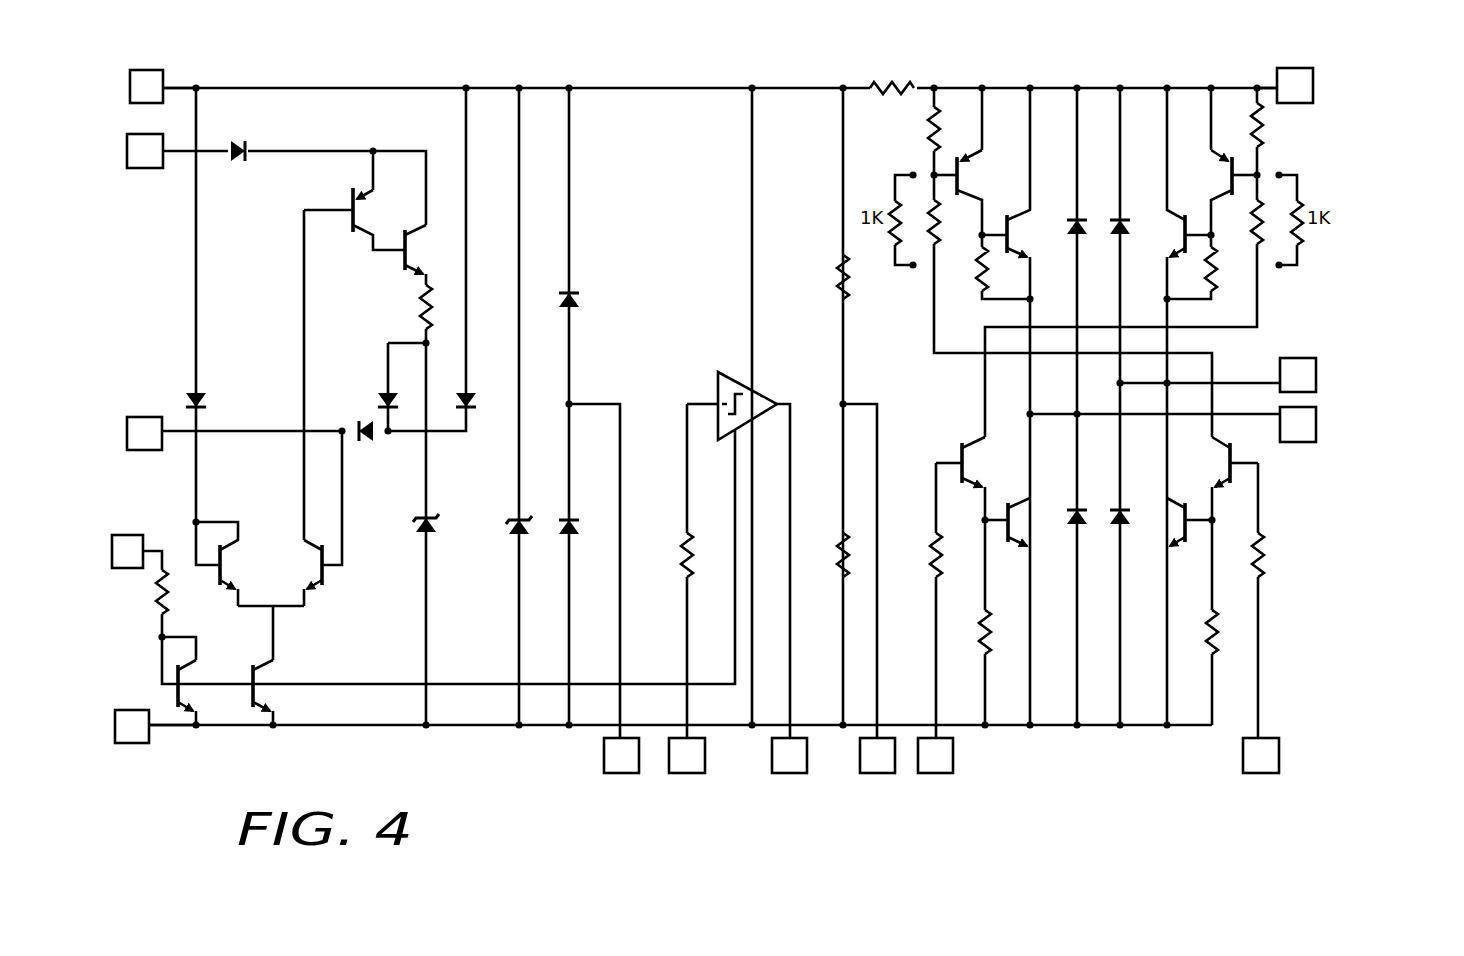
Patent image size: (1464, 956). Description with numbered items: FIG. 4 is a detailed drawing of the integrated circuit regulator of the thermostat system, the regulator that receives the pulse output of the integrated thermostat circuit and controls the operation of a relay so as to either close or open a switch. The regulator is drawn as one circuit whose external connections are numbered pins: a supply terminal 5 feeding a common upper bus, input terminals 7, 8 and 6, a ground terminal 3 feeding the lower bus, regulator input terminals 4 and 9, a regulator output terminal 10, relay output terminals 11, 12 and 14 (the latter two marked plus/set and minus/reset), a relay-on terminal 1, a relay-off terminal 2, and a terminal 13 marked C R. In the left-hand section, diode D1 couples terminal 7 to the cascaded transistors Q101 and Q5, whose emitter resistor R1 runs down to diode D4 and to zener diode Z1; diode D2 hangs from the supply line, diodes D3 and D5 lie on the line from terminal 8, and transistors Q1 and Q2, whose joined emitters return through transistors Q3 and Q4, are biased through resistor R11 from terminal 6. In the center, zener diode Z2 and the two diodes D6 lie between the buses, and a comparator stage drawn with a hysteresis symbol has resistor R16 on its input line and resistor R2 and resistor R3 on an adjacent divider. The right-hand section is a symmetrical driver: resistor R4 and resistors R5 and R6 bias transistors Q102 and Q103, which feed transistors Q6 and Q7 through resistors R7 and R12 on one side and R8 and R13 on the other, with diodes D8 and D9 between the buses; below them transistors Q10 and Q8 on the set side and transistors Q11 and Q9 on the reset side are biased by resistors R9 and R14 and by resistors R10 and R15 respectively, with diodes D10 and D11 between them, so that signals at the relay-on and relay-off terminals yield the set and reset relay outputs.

The RLY ON terminal 1 is at (936, 699).
The RLY OFF terminal 2 is at (1261, 699).
The ground terminal 3 is at (155, 726).
The REG IN 2 terminal 4 is at (606, 623).
The supply terminal 5 is at (163, 86).
The input terminal 6 is at (137, 552).
The input terminal 7 is at (177, 151).
The input terminal 8 is at (234, 433).
The REG IN 1 terminal 9 is at (687, 710).
The REG OUT 1 terminal 10 is at (790, 623).
The wires 11 is at (871, 623).
The temperature conditioning apparatus 12 is at (1262, 375).
The C_R terminal 13 is at (1306, 87).
The RLY OUT -/RESET terminal 14 is at (1219, 424).
The diode D1 is at (256, 146).
The diode D2 is at (207, 390).
The diode D3 is at (364, 443).
The diode D4 is at (373, 390).
The diode D5 is at (476, 390).
The diode D6 is at (583, 406).
The diode D8 is at (1086, 406).
The diode D9 is at (1129, 406).
The diode D10 is at (1087, 542).
The diode D11 is at (1135, 542).
The zener diode Z1 is at (436, 538).
The zener diode Z2 is at (527, 406).
The transistor Q1 is at (225, 564).
The transistor Q2 is at (299, 573).
The transistor Q3 is at (202, 692).
The transistor Q4 is at (277, 692).
The transistor Q5 is at (422, 255).
The transistor Q6 is at (1025, 406).
The transistor Q7 is at (1166, 406).
The transistor Q8 is at (1012, 522).
The transistor Q9 is at (1179, 522).
The transistor Q10 is at (970, 523).
The transistor Q11 is at (1220, 523).
The transistor Q101 is at (382, 200).
The transistor Q102 is at (974, 163).
The transistor Q103 is at (1214, 163).
The resistor 4K R1 is at (422, 307).
The resistor 6K R2 is at (824, 406).
The resistor 6K R3 is at (827, 556).
The resistor 5K R4 is at (892, 89).
The resistor 2K R5 is at (930, 129).
The resistor 2K R6 is at (1256, 125).
The resistor 1K R7 is at (947, 223).
The resistor 1K R8 is at (1240, 222).
The resistor -5K R9 is at (913, 520).
The resistor -5K R10 is at (1263, 520).
The resistor 1K R11 is at (181, 594).
The resistor 10K R12 is at (988, 267).
The resistor 10K R13 is at (1206, 267).
The resistor 10K R14 is at (983, 667).
The resistor 10K R15 is at (1210, 667).
The resistor 500 ohm R16 is at (672, 491).